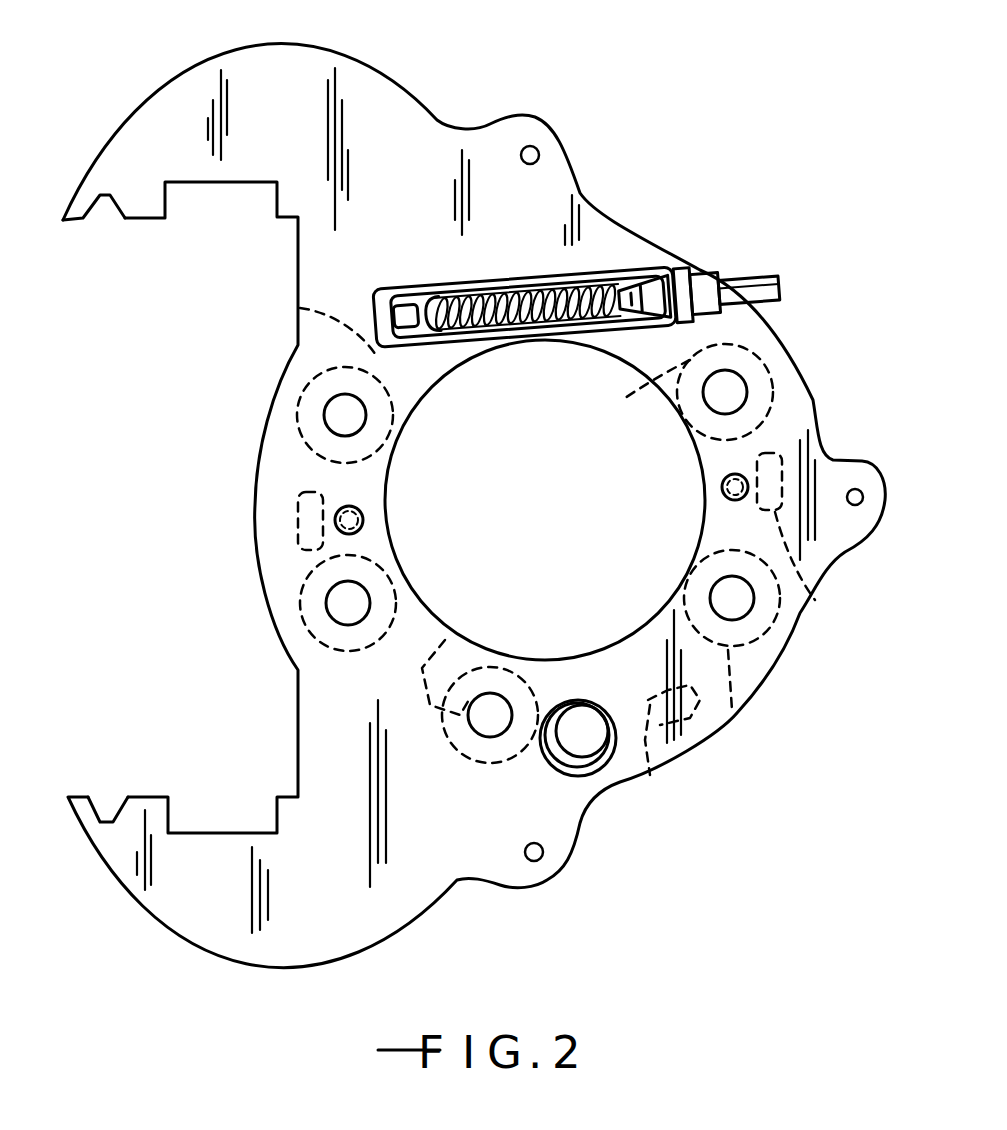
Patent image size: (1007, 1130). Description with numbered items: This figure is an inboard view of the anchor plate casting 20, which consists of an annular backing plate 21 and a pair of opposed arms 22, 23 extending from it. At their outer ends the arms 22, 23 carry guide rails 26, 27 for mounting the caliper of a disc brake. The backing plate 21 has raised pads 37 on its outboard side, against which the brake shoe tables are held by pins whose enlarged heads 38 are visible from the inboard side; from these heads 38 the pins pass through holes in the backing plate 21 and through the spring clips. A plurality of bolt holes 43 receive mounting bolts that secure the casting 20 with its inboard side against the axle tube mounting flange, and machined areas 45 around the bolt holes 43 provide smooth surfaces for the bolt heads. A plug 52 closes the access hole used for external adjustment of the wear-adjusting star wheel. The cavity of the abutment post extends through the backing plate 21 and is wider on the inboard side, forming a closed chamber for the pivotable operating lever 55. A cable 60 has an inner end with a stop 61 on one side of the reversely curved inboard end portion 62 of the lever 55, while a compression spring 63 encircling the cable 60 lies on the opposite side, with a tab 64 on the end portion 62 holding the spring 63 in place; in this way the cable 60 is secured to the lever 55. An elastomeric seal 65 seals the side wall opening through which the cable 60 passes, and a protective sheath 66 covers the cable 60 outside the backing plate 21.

The anchor plate casting 20 is at (572, 268).
The annular backing plate 21 is at (812, 400).
The arm 22 is at (330, 48).
The arm 23 is at (378, 932).
The guide rail 26 is at (95, 218).
The guide rail 27 is at (100, 800).
The raised pads 37 is at (298, 308).
The enlarged heads 38 is at (364, 520).
The bolt holes 43 is at (746, 393).
The machined areas 45 is at (772, 350).
The plug 52 is at (580, 697).
The operating lever 55 is at (468, 340).
The cable 60 is at (606, 266).
The stop 61 is at (386, 300).
The reversely curved inboard end portion 62 is at (412, 290).
The compression spring 63 is at (605, 300).
The tab 64 is at (455, 318).
The elastomeric seal 65 is at (695, 280).
The protective sheath 66 is at (765, 276).